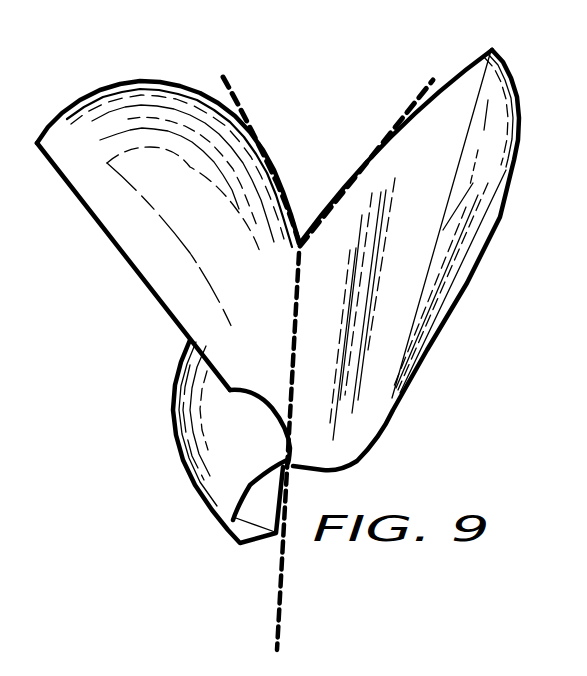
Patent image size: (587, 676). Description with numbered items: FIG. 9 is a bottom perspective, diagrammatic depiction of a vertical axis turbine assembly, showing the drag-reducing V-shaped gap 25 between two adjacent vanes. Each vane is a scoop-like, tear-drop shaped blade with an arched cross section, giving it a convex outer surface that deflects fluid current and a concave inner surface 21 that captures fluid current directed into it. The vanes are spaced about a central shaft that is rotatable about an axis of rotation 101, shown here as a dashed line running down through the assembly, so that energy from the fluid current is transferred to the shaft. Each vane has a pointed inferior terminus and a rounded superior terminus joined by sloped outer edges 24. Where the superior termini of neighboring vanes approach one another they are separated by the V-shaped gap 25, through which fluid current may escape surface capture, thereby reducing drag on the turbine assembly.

The concave inner surface 21 is at (466, 100).
The sloped outer edge 24 is at (437, 247).
The V-shaped gap 25 is at (322, 131).
The axis of rotation 101 is at (283, 604).